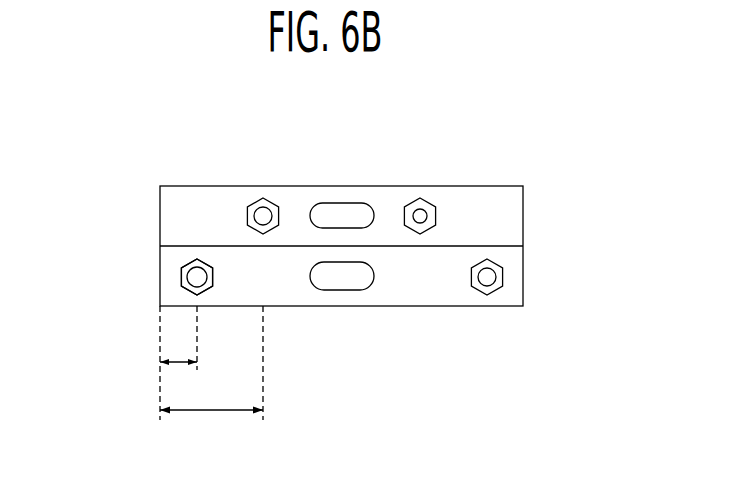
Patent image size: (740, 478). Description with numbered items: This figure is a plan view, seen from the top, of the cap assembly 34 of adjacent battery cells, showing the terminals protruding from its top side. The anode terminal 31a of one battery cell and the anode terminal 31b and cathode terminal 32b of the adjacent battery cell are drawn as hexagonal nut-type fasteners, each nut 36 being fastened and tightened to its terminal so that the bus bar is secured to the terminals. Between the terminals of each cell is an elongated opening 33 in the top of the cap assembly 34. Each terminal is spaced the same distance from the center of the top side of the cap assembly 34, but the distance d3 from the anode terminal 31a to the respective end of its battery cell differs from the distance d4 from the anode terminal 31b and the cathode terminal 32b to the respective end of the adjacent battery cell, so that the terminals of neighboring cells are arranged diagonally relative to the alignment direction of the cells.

The cap assembly 34 is at (224, 210).
The anode terminal 31b is at (265, 201).
The slot 33 is at (342, 209).
The cathode terminal 32b is at (418, 206).
The nut 36 is at (185, 274).
The anode terminal 31a is at (490, 273).
The distance d3 is at (178, 363).
The distance d4 is at (211, 375).